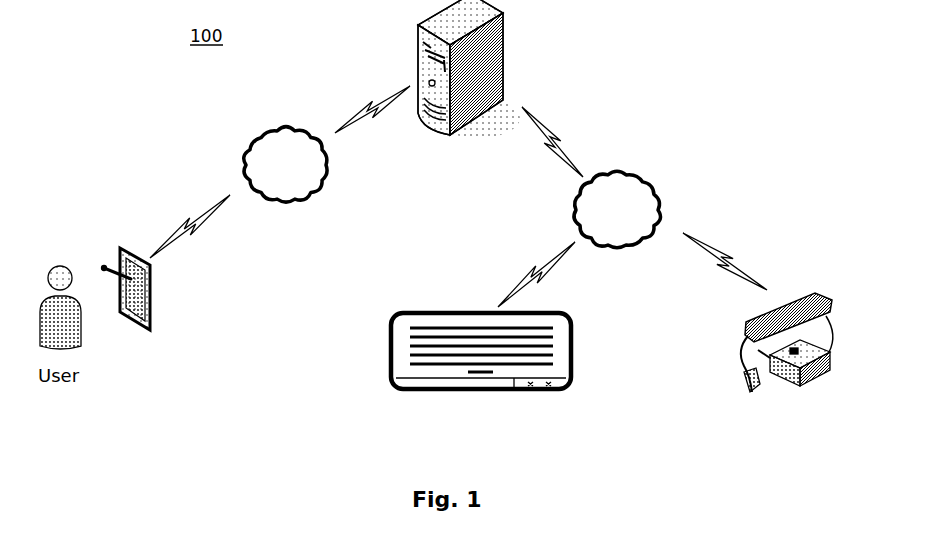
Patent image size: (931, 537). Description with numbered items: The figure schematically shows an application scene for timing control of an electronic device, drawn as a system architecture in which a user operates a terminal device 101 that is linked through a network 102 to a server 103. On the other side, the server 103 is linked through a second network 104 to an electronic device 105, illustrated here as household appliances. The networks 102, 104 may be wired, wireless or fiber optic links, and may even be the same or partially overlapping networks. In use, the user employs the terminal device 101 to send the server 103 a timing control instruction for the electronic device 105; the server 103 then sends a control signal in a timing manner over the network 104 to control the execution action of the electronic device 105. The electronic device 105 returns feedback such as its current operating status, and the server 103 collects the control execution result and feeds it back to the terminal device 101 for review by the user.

The terminal device 101 is at (160, 289).
The network 102 is at (285, 164).
The server 103 is at (469, 90).
The network 104 is at (617, 209).
The electronic device 105 is at (612, 365).